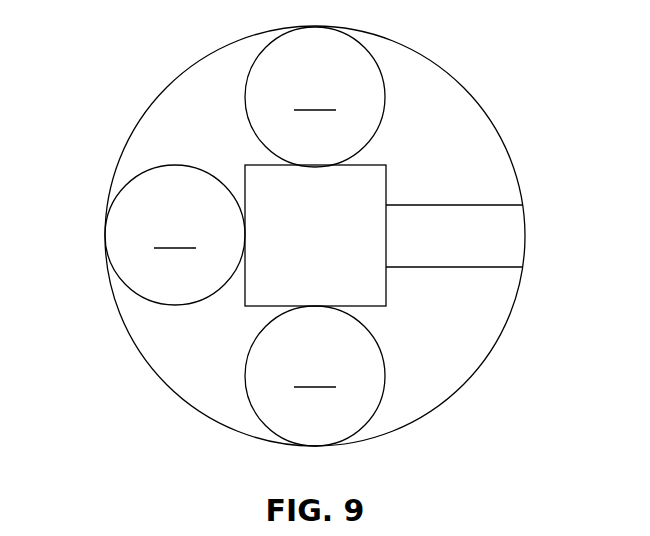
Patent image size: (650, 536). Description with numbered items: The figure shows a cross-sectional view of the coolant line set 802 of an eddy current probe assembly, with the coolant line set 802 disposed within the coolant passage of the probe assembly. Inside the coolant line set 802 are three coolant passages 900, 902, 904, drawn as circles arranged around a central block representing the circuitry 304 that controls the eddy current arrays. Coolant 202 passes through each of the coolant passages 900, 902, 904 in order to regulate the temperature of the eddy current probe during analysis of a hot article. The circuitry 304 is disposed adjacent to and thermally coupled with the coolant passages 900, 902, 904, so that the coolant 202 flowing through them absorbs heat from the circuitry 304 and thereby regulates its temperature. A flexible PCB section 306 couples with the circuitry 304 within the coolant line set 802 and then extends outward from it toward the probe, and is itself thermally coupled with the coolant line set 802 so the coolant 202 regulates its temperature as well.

The coolant line set 802 is at (126, 32).
The coolant passage 900 is at (370, 50).
The coolant passage 902 is at (118, 190).
The coolant passage 904 is at (260, 425).
The coolant 202 is at (245, 235).
The circuitry 304 is at (370, 285).
The flexible PCB section 306 is at (510, 225).